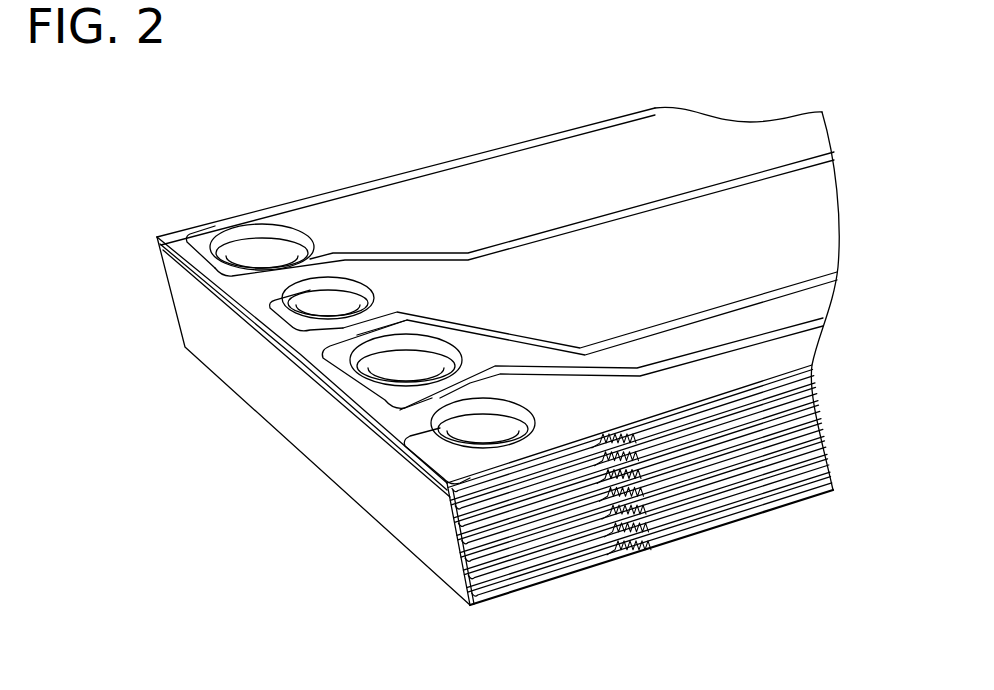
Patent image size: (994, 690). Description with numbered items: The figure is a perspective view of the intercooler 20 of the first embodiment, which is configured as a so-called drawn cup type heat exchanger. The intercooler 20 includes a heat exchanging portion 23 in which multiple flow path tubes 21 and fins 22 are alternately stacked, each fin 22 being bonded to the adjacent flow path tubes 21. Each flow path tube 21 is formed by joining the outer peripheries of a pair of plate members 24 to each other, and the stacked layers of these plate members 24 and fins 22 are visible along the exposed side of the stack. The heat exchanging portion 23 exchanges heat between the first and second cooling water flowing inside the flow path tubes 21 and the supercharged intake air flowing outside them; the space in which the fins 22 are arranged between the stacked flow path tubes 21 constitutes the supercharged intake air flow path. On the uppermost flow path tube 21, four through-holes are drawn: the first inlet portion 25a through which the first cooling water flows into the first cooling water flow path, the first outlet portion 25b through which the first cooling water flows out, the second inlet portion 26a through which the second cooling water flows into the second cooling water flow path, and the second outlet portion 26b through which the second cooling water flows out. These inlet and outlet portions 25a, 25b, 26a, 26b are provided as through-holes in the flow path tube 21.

The intercooler 20 is at (368, 162).
The flow path tube 21 is at (462, 566).
The fin 22 is at (608, 553).
The heat exchanging portion 23 is at (273, 207).
The plate member 24 is at (690, 515).
The first inlet portion 25a is at (220, 240).
The first outlet portion 25b is at (262, 308).
The second inlet portion 26a is at (320, 363).
The second outlet portion 26b is at (403, 442).